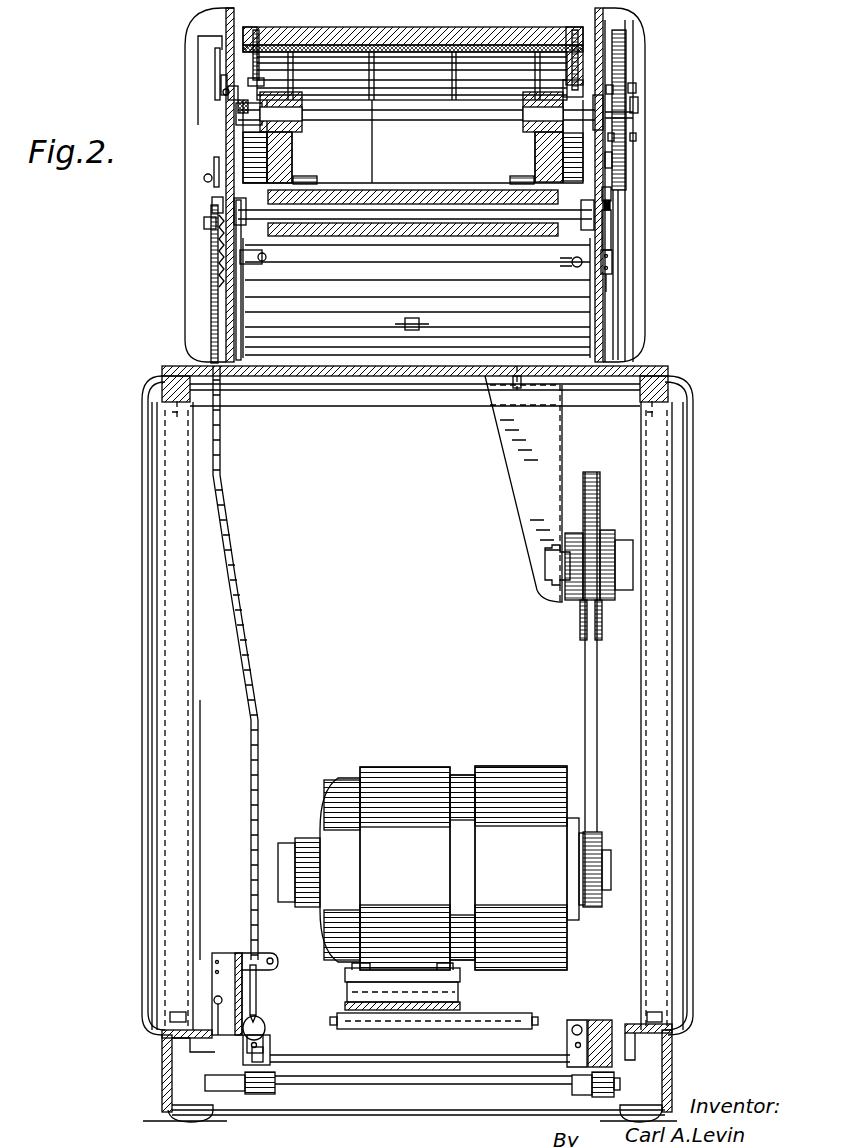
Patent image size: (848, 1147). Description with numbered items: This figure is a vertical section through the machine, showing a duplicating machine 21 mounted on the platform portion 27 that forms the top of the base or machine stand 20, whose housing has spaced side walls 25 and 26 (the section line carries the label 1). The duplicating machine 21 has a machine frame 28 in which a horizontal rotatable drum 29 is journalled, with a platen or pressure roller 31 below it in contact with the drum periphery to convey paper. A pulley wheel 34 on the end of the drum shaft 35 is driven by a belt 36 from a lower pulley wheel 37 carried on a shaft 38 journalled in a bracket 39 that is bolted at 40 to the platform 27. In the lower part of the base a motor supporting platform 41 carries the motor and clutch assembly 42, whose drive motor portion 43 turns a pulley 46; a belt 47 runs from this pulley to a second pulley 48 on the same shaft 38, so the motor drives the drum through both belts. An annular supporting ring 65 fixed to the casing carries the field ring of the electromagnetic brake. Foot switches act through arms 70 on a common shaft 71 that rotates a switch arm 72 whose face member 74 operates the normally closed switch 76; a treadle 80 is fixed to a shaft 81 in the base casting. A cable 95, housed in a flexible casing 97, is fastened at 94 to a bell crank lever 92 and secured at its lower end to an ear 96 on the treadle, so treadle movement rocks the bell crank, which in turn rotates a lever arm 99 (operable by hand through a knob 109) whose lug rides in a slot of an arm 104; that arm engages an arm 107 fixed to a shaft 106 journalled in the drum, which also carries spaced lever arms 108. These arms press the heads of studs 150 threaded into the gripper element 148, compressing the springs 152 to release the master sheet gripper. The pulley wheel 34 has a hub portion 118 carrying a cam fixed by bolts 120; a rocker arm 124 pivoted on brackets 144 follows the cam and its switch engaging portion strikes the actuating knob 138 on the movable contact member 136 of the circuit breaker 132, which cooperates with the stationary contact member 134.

The section line 1 is at (228, 22).
The base or machine stand 20 is at (699, 712).
The duplicating machine 21 is at (673, 1068).
The side wall 25 is at (143, 800).
The side wall 26 is at (693, 806).
The platform portion 27 is at (650, 367).
The machine frame 28 is at (230, 314).
The drum 29 is at (513, 50).
The platen or pressure roller 31 is at (494, 231).
The pulley wheel 34 is at (637, 70).
The shaft 35 is at (443, 118).
The belt 36 is at (620, 303).
The lower pulley wheel 37 is at (633, 557).
The shaft 38 is at (548, 568).
The bracket 39 is at (520, 458).
The bolts 40 is at (518, 364).
The motor supporting platform 41 is at (465, 997).
The motor and clutch assembly 42 is at (344, 776).
The drive motor portion 43 is at (404, 772).
The pulley 46 is at (600, 833).
The belt 47 is at (590, 660).
The second pulley 48 is at (574, 482).
The annular supporting ring 65 is at (500, 766).
The arm 70 is at (258, 1096).
The common shaft 71 is at (378, 1088).
The switch arm 72 is at (185, 1068).
The switch operating face member 74 is at (208, 1000).
The normally closed switch 76 is at (207, 965).
The treadle 80 is at (270, 1052).
The shaft 81 is at (480, 1055).
The bell crank lever 92 is at (212, 190).
The fastening 94 is at (204, 177).
The cable 95 is at (212, 200).
The ear 96 is at (258, 1026).
The flexible casing 97 is at (222, 508).
The lever arm 99 is at (215, 60).
The arm 104 is at (223, 107).
The shaft 106 is at (440, 46).
The arm 107 is at (224, 92).
The lever arms 108 is at (240, 110).
The hand grasp knob 109 is at (250, 71).
The hub portion 118 is at (643, 108).
The bolts 120 is at (636, 90).
The rocker arm 124 is at (613, 167).
The circuit breaker 132 is at (620, 271).
The stationary contact member 134 is at (610, 243).
The movable contact member 136 is at (612, 228).
The actuating knob 138 is at (612, 214).
The brackets 144 is at (622, 193).
The gripper element 148 is at (432, 48).
The stud 150 is at (262, 38).
The compression spring 152 is at (238, 84).